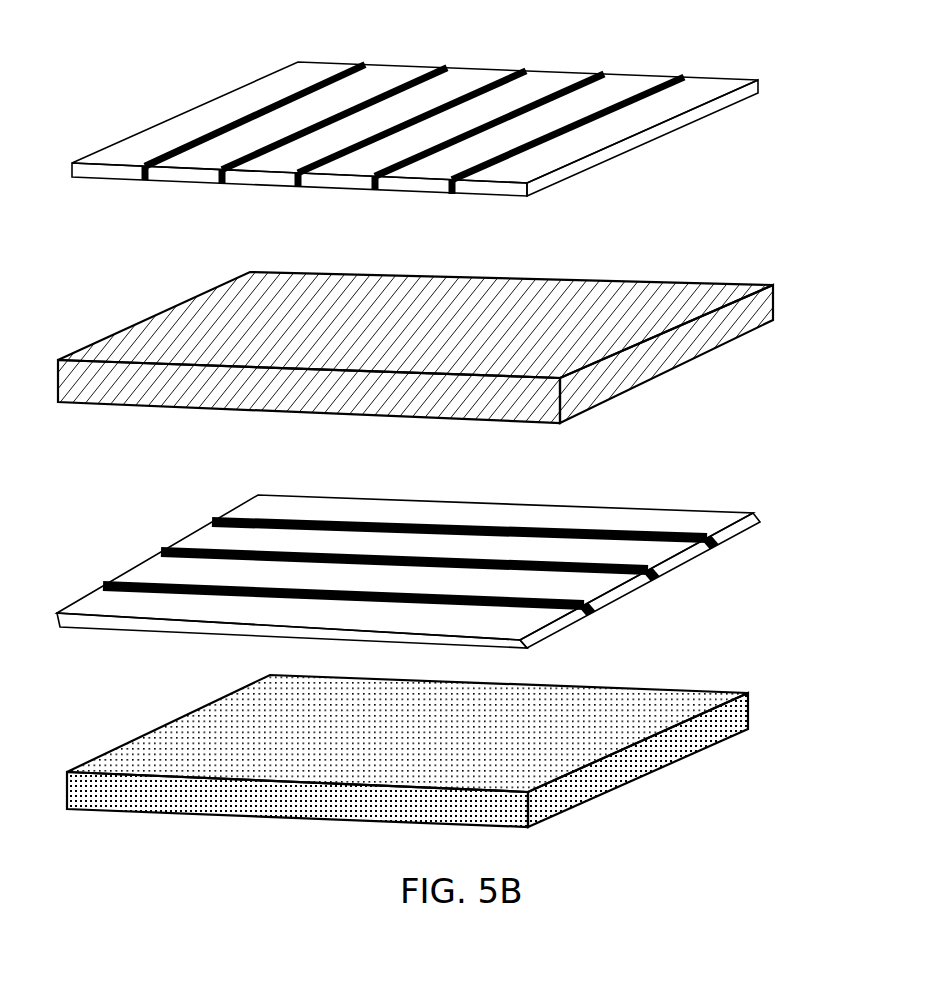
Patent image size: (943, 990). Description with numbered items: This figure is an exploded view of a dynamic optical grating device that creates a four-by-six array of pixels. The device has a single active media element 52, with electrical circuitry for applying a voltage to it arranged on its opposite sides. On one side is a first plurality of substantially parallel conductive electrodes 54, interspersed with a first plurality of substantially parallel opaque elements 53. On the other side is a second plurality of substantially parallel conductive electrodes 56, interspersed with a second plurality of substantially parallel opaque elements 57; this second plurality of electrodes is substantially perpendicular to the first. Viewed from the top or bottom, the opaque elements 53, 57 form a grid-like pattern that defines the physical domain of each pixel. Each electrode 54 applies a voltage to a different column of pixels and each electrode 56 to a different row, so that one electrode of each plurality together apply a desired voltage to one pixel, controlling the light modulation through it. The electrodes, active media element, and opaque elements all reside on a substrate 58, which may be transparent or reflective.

The active media element 52 is at (420, 340).
The first plurality of substantially parallel opaque elements 53 is at (414, 98).
The first plurality of substantially parallel conductive electrodes 54 is at (426, 103).
The second plurality of substantially parallel conductive electrodes 56 is at (443, 571).
The second plurality of substantially parallel opaque elements 57 is at (368, 558).
The substrate 58 is at (454, 751).